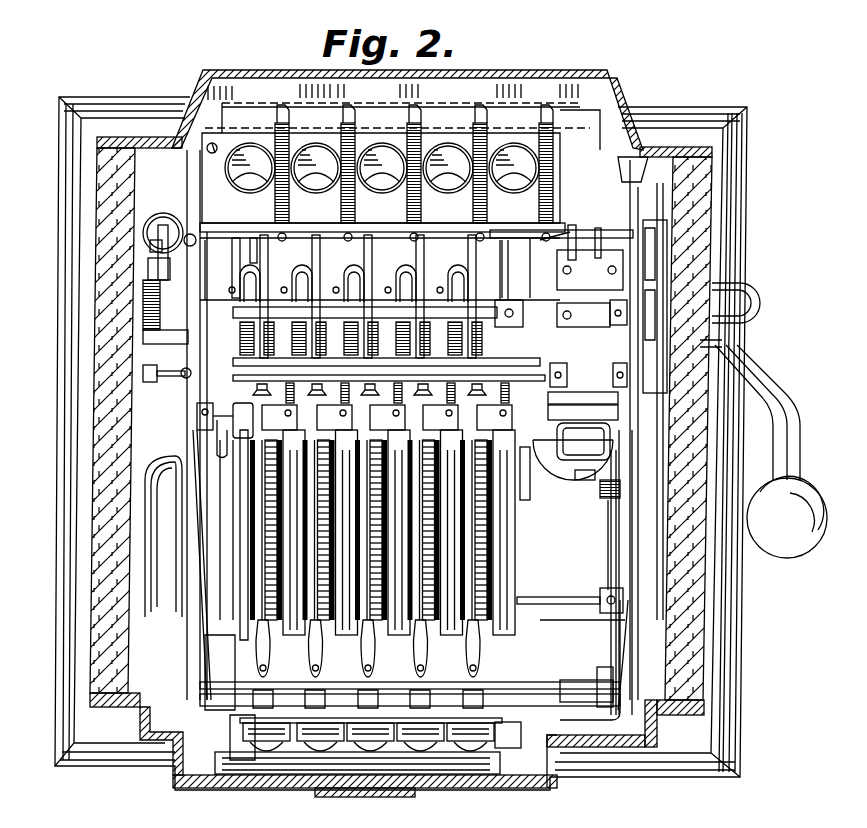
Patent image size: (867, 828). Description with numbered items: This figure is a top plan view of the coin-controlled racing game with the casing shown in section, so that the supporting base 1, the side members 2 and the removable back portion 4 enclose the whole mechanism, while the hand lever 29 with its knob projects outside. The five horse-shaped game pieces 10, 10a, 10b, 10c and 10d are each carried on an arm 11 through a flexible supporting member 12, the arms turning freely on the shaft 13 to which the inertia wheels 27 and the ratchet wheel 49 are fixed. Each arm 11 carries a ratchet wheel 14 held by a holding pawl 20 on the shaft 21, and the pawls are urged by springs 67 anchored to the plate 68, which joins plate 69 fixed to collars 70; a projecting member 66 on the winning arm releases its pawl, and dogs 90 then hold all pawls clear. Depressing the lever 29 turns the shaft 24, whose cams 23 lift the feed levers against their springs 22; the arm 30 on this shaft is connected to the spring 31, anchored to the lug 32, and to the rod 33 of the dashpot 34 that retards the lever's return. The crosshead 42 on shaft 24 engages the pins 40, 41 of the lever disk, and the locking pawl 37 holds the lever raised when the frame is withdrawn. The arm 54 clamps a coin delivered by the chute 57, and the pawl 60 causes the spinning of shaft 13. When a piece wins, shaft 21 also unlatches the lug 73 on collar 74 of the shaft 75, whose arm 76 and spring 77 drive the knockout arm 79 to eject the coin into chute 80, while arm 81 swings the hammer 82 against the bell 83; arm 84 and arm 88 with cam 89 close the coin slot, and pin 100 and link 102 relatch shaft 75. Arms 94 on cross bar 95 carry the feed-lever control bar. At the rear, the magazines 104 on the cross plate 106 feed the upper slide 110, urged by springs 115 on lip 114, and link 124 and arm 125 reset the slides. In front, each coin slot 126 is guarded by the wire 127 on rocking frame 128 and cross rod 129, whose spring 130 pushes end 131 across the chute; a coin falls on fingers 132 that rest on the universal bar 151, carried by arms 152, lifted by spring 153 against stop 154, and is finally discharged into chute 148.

The supporting base 1 is at (670, 136).
The side members 2 is at (116, 462).
The back portion 4 is at (153, 145).
The game piece 10 is at (482, 660).
The game piece 10a is at (412, 660).
The game piece 10b is at (362, 660).
The game piece 10c is at (310, 660).
The game piece 10d is at (258, 660).
The arm 11 is at (473, 547).
The flexible supporting member 12 is at (477, 625).
The shaft 13 is at (548, 478).
The ratchet wheel 14 is at (480, 497).
The holding pawl 20 is at (500, 410).
The shaft 21 is at (218, 432).
The spring 22 is at (472, 250).
The cam 23 is at (420, 250).
The shaft 24 is at (510, 290).
The inertia wheel 27 is at (505, 600).
The hand lever 29 is at (778, 522).
The arm 30 is at (148, 264).
The spring 31 is at (143, 298).
The lug 32 is at (143, 373).
The rod 33 is at (150, 242).
The dashpot 34 is at (160, 228).
The locking pawl 37 is at (660, 274).
The operating pin 40 is at (640, 262).
The operating pin 41 is at (713, 338).
The crosshead 42 is at (735, 285).
The ratchet wheel 49 is at (608, 505).
The arm 54 is at (583, 398).
The chute 57 is at (580, 482).
The pawl 60 is at (592, 232).
The projecting member 66 is at (500, 573).
The spring 67 is at (450, 396).
The plate 68 is at (390, 396).
The plate 69 is at (240, 395).
The collars 70 is at (240, 417).
The lug 73 is at (588, 318).
The collar 74 is at (565, 240).
The shaft 75 is at (357, 308).
The arm 76 is at (236, 240).
The spring 77 is at (254, 240).
The knockout arm 79 is at (745, 305).
The chute 80 is at (613, 495).
The arm 81 is at (143, 338).
The hammer 82 is at (145, 380).
The bell 83 is at (160, 548).
The arm 84 is at (583, 441).
The arm 88 is at (572, 226).
The cam 89 is at (560, 228).
The dog 90 is at (300, 275).
The arms 94 is at (297, 228).
The cross bar 95 is at (322, 228).
The pin 100 is at (502, 280).
The link 102 is at (505, 265).
The magazines 104 is at (252, 152).
The cross plate 106 is at (600, 137).
The upper slide 110 is at (523, 125).
The upstanding lip 114 is at (505, 105).
The springs 115 is at (590, 100).
The link 124 is at (205, 240).
The arm 125 is at (190, 234).
The coin slot 126 is at (467, 730).
The wire 127 is at (497, 742).
The rocking frame 128 is at (490, 675).
The cross rod 129 is at (585, 684).
The spring 130 is at (466, 660).
The end 131 is at (247, 728).
The fingers 132 is at (440, 750).
The chute 148 is at (230, 640).
The universal bar 151 is at (555, 604).
The arms 152 is at (195, 612).
The spring 153 is at (603, 660).
The stop 154 is at (626, 622).